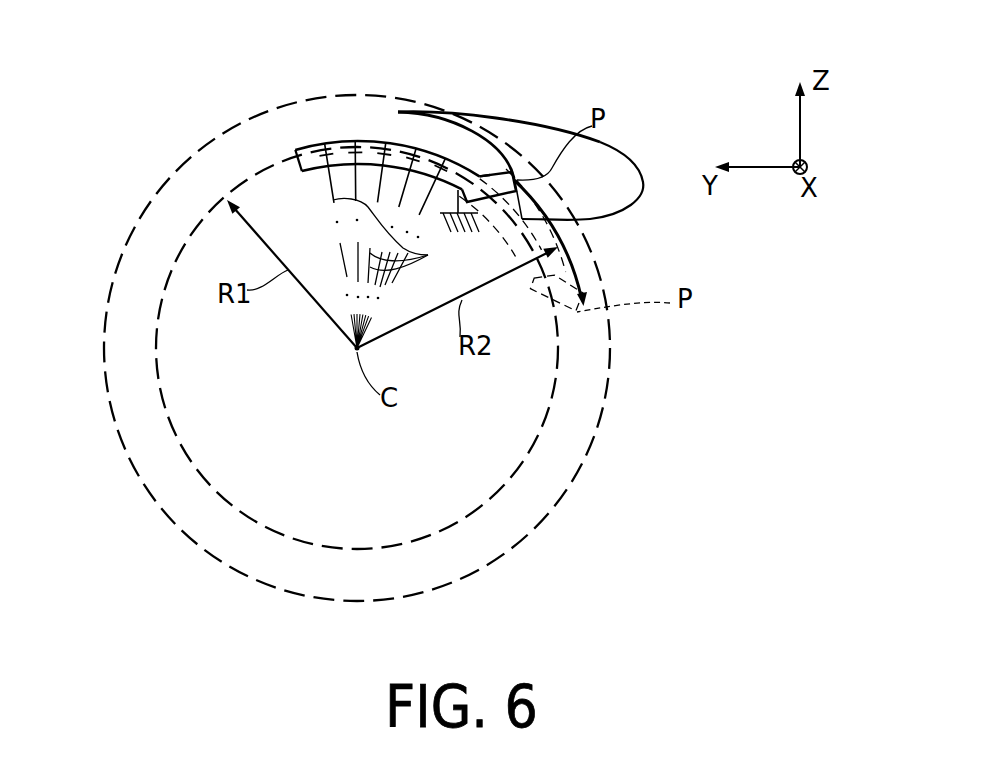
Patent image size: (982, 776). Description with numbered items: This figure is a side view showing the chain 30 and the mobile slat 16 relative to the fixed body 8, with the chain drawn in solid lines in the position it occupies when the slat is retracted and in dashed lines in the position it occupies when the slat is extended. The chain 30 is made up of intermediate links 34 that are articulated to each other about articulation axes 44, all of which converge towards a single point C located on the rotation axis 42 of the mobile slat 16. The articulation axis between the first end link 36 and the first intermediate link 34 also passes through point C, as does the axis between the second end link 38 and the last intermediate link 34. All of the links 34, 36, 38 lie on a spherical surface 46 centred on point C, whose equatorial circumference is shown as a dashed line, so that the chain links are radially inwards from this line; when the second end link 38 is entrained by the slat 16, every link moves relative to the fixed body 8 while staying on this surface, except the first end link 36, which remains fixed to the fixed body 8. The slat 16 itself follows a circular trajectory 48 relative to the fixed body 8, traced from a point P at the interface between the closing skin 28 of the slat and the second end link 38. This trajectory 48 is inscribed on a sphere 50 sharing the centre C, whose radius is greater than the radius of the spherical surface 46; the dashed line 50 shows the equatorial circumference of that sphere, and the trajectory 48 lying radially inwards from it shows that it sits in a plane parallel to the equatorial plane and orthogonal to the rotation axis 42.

The fixed body 8 is at (478, 220).
The mobile slat 16 is at (624, 142).
The closing skin 28 is at (430, 122).
The chain 30 is at (306, 182).
The intermediate links 34 is at (372, 142).
The first end link 36 is at (443, 164).
The second end link 38 is at (484, 175).
The rotation axis 42 is at (354, 350).
The articulation axes 44 is at (418, 253).
The spherical surface 46 is at (165, 291).
The circular trajectory 48 is at (574, 268).
The sphere 50 is at (607, 365).